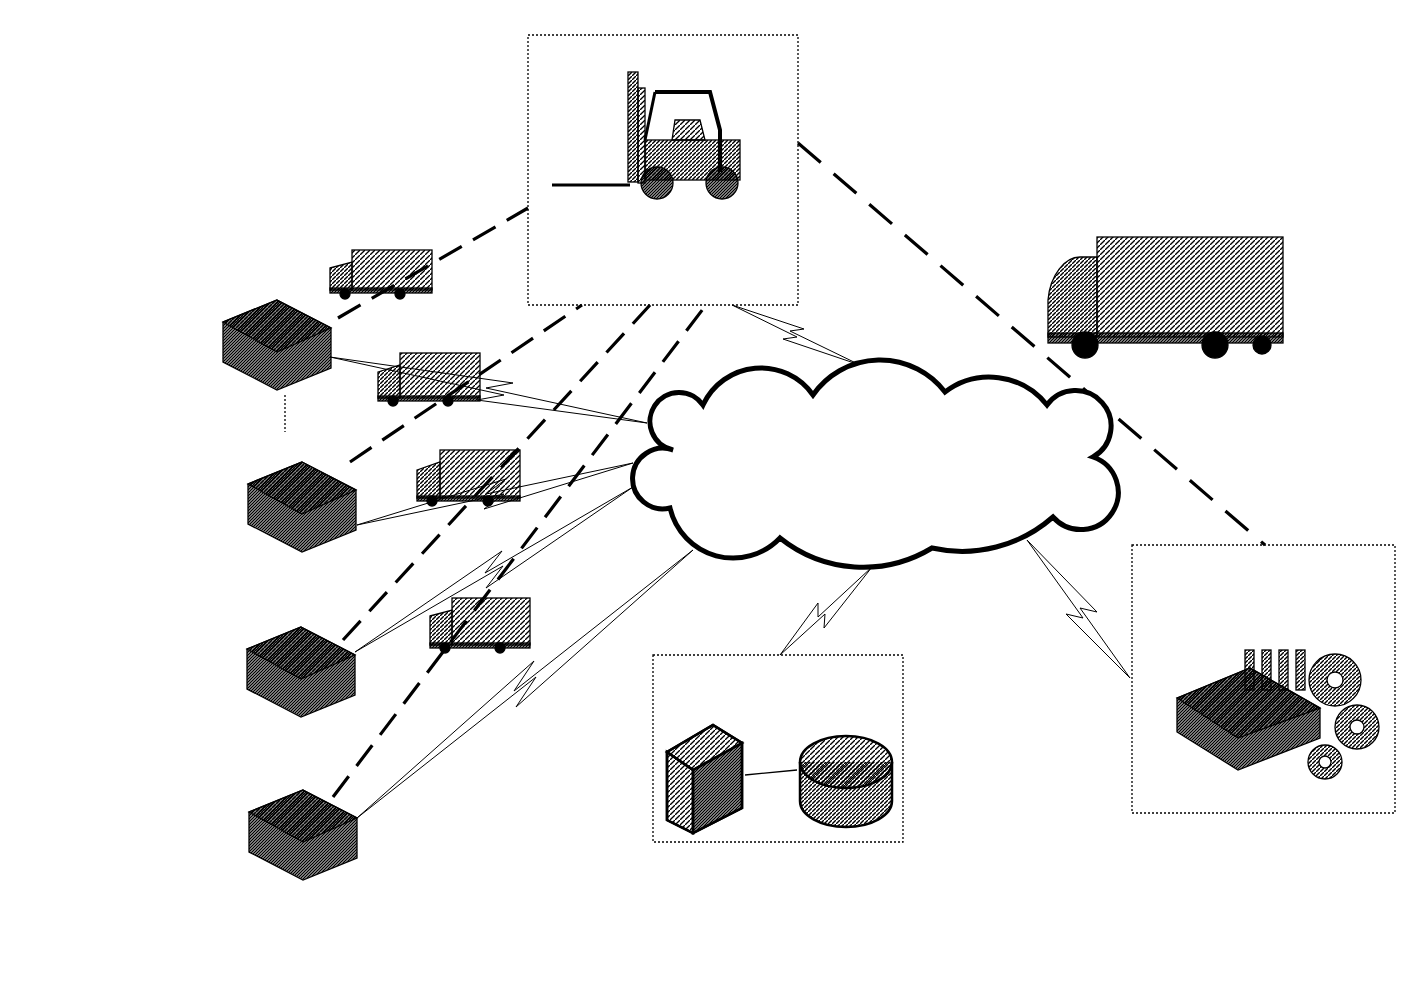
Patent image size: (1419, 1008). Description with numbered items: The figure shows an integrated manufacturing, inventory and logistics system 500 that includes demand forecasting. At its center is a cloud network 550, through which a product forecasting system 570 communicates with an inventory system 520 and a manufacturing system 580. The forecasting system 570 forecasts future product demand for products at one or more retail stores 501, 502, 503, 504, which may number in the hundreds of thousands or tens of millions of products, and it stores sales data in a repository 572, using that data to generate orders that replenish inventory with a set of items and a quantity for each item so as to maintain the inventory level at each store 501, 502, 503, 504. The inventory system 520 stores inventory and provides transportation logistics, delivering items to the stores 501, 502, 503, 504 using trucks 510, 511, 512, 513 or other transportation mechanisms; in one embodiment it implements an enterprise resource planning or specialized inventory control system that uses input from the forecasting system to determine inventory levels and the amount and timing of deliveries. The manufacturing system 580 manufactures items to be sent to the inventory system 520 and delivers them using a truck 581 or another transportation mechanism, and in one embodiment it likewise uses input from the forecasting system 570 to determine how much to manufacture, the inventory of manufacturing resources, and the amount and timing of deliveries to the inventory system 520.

The integrated manufacturing, inventory and logistics system 500 is at (993, 138).
The retail store 501 is at (225, 332).
The retail store 502 is at (248, 500).
The retail store 503 is at (248, 665).
The retail store 504 is at (250, 825).
The truck 510 is at (373, 253).
The truck 511 is at (430, 358).
The truck 512 is at (420, 492).
The truck 513 is at (528, 618).
The inventory system 520 is at (800, 70).
The cloud network 550 is at (886, 517).
The product forecasting system 570 is at (675, 725).
The repository 572 is at (867, 803).
The manufacturing system 580 is at (1157, 750).
The truck 581 is at (1210, 237).